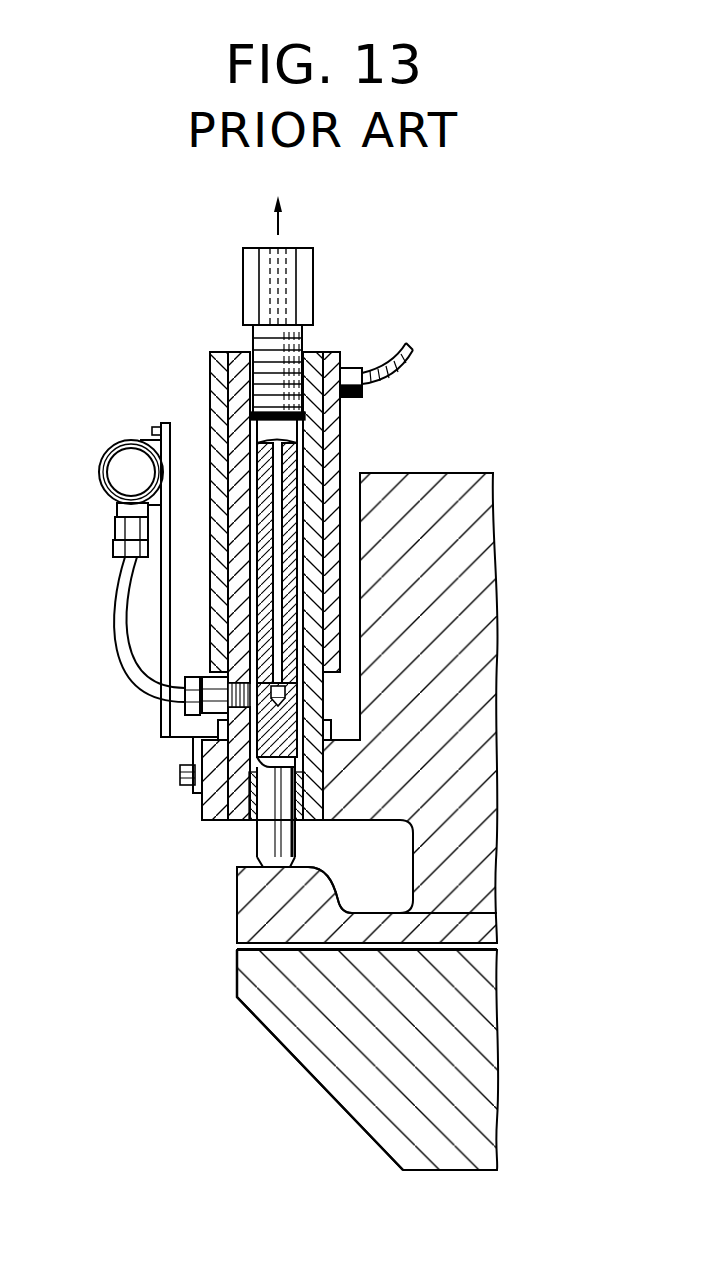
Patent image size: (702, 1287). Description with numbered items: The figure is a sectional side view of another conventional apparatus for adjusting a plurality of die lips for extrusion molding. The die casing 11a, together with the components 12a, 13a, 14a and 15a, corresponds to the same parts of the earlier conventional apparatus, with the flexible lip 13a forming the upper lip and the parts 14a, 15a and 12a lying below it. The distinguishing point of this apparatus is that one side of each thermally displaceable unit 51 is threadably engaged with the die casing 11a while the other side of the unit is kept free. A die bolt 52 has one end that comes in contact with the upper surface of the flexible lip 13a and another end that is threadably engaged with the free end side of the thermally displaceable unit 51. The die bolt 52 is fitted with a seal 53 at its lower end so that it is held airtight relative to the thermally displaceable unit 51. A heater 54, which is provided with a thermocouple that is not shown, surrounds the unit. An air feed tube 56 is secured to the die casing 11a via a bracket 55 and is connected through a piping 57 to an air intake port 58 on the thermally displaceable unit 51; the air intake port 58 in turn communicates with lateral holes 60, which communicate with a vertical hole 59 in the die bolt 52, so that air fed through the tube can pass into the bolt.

The thermally displaceable unit 51 is at (238, 352).
The die bolt 52 is at (307, 276).
The seal 53 is at (310, 822).
The heater 54 is at (212, 356).
The bracket 55 is at (161, 737).
The air feed tube 56 is at (107, 452).
The piping 57 is at (122, 600).
The air intake port 58 is at (230, 673).
The vertical hole 59 is at (283, 549).
The lateral holes 60 is at (286, 697).
The die casing 11a is at (480, 848).
The die casing component 12a is at (463, 1016).
The flexible lip 13a is at (237, 910).
The die lip component 14a is at (237, 970).
The die lip gap component 15a is at (237, 946).